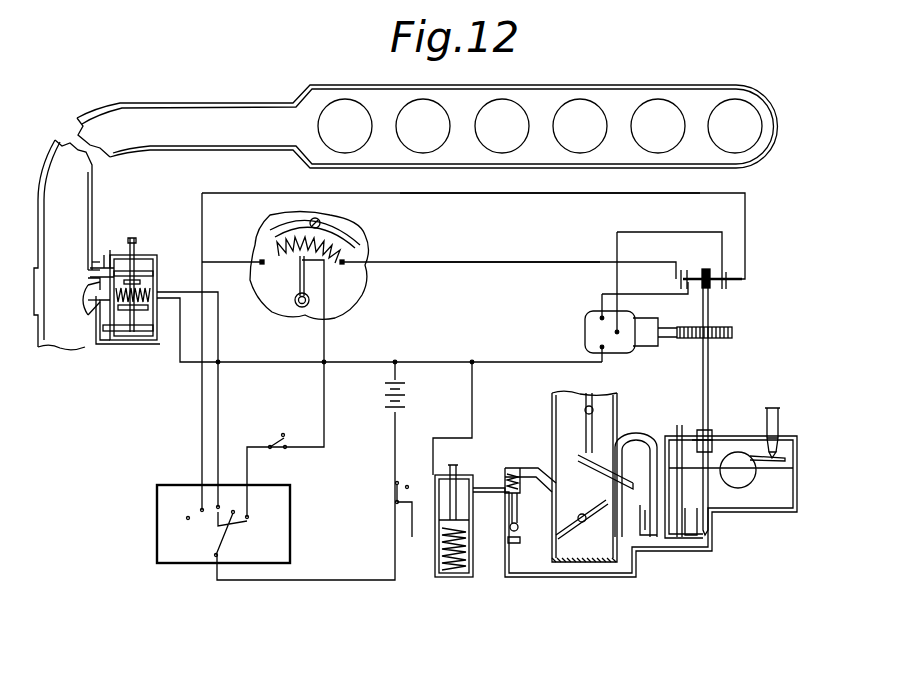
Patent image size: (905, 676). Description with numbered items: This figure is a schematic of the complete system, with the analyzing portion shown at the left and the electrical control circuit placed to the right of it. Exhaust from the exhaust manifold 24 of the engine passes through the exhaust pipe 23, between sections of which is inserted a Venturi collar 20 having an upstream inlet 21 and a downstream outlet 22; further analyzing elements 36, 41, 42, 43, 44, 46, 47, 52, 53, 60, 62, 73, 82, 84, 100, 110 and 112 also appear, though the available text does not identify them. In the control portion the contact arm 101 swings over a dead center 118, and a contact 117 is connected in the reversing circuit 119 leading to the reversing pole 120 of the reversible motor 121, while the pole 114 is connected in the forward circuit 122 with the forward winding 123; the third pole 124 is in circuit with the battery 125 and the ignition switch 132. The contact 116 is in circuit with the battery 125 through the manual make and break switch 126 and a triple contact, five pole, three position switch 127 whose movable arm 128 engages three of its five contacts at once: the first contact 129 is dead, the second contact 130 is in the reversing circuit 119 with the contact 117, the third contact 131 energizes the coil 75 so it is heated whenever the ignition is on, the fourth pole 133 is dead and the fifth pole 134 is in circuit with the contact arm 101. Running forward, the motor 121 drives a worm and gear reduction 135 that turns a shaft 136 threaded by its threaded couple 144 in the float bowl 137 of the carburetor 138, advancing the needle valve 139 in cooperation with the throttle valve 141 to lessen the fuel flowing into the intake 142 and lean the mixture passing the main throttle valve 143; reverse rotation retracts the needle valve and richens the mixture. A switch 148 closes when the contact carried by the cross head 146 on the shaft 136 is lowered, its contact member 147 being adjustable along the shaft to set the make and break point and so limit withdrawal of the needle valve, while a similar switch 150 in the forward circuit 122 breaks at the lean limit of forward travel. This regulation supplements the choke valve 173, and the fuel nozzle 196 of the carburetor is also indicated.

The Venturi collar 20 is at (42, 284).
The upstream inlet 21 is at (94, 282).
The downstream outlet 22 is at (92, 300).
The exhaust pipe 23 is at (83, 172).
The exhaust manifold 24 is at (590, 86).
The flange 36 is at (90, 270).
The funnel connection 41 is at (90, 292).
The fitting 42 is at (100, 320).
The valve stem 43 is at (128, 252).
The inlet pipe 44 is at (100, 266).
The vent pipe 46 is at (130, 260).
The valve body 47 is at (152, 342).
The thermostat 52 is at (140, 240).
The valve disc 53 is at (126, 342).
The diaphragm plate 60 is at (150, 274).
The collar 62 is at (138, 280).
The bracket 73 is at (92, 262).
The coil 75 is at (155, 279).
The heater lead wire 82 is at (379, 330).
The lower plate 84 is at (100, 342).
The thermostat housing 100 is at (347, 290).
The contact arm 101 is at (290, 306).
The adjusting arc 110 is at (333, 243).
The bimetal element 112 is at (300, 253).
The pole 114 is at (344, 262).
The contact 116 is at (332, 308).
The contact 117 is at (262, 263).
The dead center 118 is at (270, 252).
The reversing circuit 119 is at (558, 194).
The reversing pole 120 is at (612, 331).
The reversible motor 121 is at (614, 343).
The forward circuit 122 is at (520, 263).
The forward winding 123 is at (598, 316).
The third pole 124 is at (600, 347).
The battery 125 is at (402, 398).
The manual make and break switch 126 is at (270, 446).
The triple contact, five pole, three position switch 127 is at (188, 537).
The movable arm 128 is at (216, 556).
The first contact 129 is at (188, 517).
The second contact 130 is at (202, 480).
The third contact 131 is at (218, 484).
The ignition switch 132 is at (396, 502).
The fourth pole 133 is at (233, 512).
The fifth pole 134 is at (256, 522).
The worm and gear reduction 135 is at (730, 336).
The shaft 136 is at (708, 378).
The float bowl 137 is at (733, 438).
The carburetor 138 is at (752, 512).
The needle valve 139 is at (702, 528).
The throttle valve 141 is at (678, 512).
The intake 142 is at (567, 462).
The main throttle valve 143 is at (590, 524).
The threaded couple 144 is at (697, 437).
The cross head 146 is at (703, 272).
The contact member 147 is at (728, 286).
The switch 148 is at (712, 272).
The switch 150 is at (680, 280).
The choke valve 173 is at (583, 419).
The fuel nozzle 196 is at (597, 477).